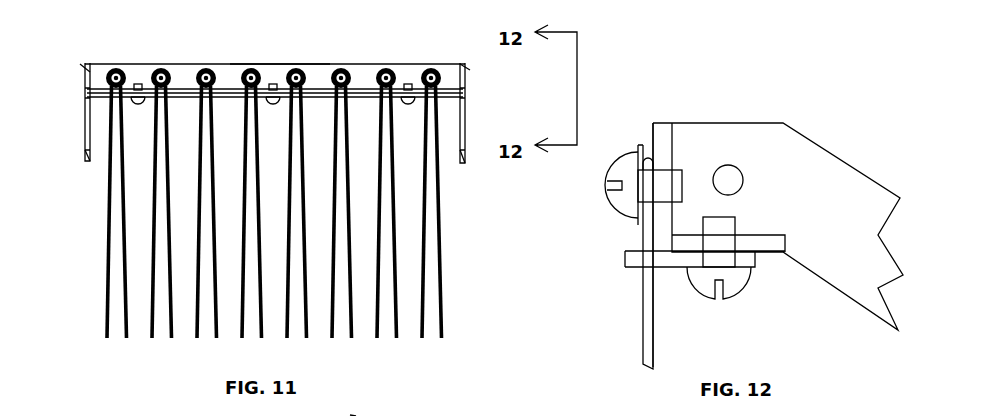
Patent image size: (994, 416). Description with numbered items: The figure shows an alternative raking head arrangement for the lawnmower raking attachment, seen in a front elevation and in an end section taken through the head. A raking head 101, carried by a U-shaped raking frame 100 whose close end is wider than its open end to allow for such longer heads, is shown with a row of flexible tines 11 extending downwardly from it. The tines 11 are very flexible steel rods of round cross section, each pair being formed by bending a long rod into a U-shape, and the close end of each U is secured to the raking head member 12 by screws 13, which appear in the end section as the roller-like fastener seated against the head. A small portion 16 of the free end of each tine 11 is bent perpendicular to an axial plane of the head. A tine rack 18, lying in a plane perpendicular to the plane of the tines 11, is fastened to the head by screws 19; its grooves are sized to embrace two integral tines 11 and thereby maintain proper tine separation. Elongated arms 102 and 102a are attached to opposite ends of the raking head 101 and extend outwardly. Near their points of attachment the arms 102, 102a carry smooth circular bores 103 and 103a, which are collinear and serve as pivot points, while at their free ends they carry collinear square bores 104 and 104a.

In FIG. 11, the flexible tines 11 is at (100, 243).
In FIG. 12, the flexible tines 11 is at (632, 300).
In FIG. 11, the raking head member 12 is at (182, 63).
In FIG. 11, the screws 13 is at (247, 63).
In FIG. 12, the screws 13 is at (605, 205).
In FIG. 11, the bent free-end portion of tine 16 is at (102, 333).
In FIG. 11, the tine rack 18 is at (358, 98).
In FIG. 12, the tine rack 18 is at (665, 272).
In FIG. 11, the screws 19 is at (138, 102).
In FIG. 12, the screws 19 is at (748, 290).
In FIG. 11, the U-shaped raking frame 100 is at (355, 415).
In FIG. 11, the raking head 101 is at (277, 63).
In FIG. 11, the elongated arm 102 is at (463, 113).
In FIG. 12, the elongated arm 102 is at (702, 120).
In FIG. 11, the elongated arm 102a is at (87, 165).
In FIG. 11, the smooth circular bore 103 is at (472, 67).
In FIG. 12, the smooth circular bore 103 is at (745, 162).
In FIG. 11, the smooth circular bore 103a is at (80, 72).
In FIG. 11, the square bore 104 is at (463, 152).
In FIG. 11, the square bore 104a is at (75, 148).